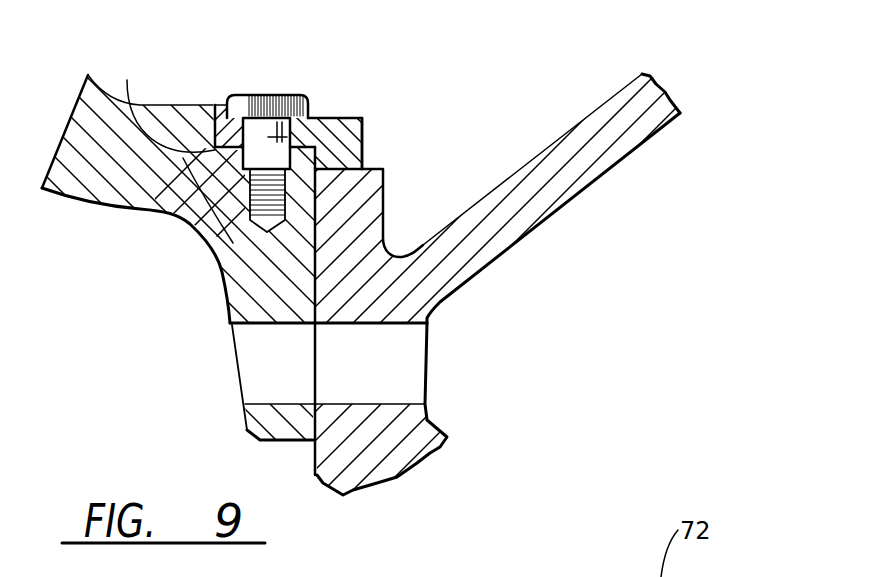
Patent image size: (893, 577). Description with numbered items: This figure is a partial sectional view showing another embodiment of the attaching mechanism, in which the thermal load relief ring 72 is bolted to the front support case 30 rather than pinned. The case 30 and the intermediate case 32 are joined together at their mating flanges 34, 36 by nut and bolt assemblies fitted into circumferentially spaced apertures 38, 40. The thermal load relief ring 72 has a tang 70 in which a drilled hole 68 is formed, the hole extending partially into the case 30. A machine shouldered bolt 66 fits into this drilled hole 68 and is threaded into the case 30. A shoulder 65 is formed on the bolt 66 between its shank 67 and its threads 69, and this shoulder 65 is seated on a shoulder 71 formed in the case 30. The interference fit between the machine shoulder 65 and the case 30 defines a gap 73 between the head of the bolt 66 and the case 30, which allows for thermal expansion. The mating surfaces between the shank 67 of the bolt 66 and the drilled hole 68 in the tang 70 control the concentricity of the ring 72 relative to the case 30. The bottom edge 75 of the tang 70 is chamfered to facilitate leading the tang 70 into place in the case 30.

The front support assembly or case 30 is at (218, 288).
The intermediate case 32 is at (552, 232).
The mating flange 34 is at (231, 325).
The mating flange 36 is at (498, 259).
The circumferentially spaced aperture 38 is at (252, 397).
The circumferentially spaced aperture 40 is at (408, 403).
The shoulder 65 is at (384, 192).
The machine shouldered bolt 66 is at (280, 94).
The shank 67 is at (364, 128).
The drilled hole 68 is at (338, 118).
The threads 69 is at (220, 240).
The tang 70 is at (313, 118).
The shoulder 71 is at (180, 219).
The thermal load relief ring 72 is at (370, 116).
The gap 73 is at (220, 105).
The bottom edge 75 is at (162, 104).